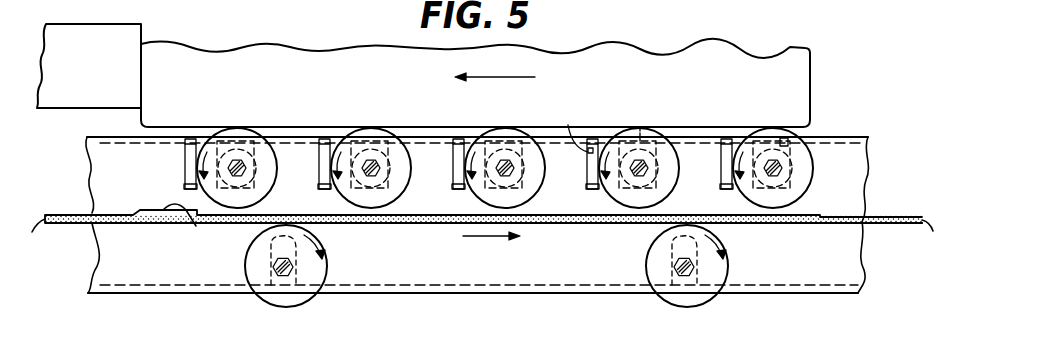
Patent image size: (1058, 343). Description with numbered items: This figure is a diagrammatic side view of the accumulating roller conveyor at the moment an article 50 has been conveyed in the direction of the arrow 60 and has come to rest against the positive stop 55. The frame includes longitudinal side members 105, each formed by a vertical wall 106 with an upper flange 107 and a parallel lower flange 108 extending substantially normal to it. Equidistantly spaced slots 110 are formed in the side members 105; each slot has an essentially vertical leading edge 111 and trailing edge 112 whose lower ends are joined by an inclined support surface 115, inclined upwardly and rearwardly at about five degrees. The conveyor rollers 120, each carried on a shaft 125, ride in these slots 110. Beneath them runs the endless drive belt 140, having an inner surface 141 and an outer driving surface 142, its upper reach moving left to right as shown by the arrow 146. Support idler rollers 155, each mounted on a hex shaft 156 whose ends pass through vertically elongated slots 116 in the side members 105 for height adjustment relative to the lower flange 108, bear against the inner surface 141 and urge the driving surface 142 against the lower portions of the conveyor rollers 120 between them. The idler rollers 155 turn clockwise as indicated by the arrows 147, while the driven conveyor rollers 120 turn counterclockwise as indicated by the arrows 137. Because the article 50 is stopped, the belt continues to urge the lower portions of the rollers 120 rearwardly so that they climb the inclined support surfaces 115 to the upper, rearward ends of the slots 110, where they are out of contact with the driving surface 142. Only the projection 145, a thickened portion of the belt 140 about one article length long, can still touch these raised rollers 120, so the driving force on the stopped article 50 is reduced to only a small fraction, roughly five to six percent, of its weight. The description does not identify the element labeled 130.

The article 50 is at (196, 60).
The positive stop 55 is at (76, 34).
The arrow 60 is at (492, 77).
The longitudinal side member 105 is at (96, 171).
The vertical wall 106 is at (866, 178).
The upper flange 107 is at (98, 134).
The lower flange 108 is at (90, 272).
The slot 110 is at (193, 145).
The leading edge 111 is at (571, 128).
The trailing edge 112 is at (640, 128).
The inclined support surface 115 is at (184, 181).
The elongated slot 116 is at (272, 254).
The conveyor roller 120 is at (218, 130).
The shaft 125 is at (240, 165).
The upper roller 130 is at (398, 180).
The arrow 137 is at (203, 164).
The drive belt 140 is at (486, 237).
The inner surface 141 is at (895, 226).
The driving surface 142 is at (65, 213).
The projection 145 is at (199, 223).
The arrow 146 is at (484, 238).
The arrow 147 is at (320, 239).
The support idler roller 155 is at (290, 302).
The hex shaft 156 is at (282, 272).